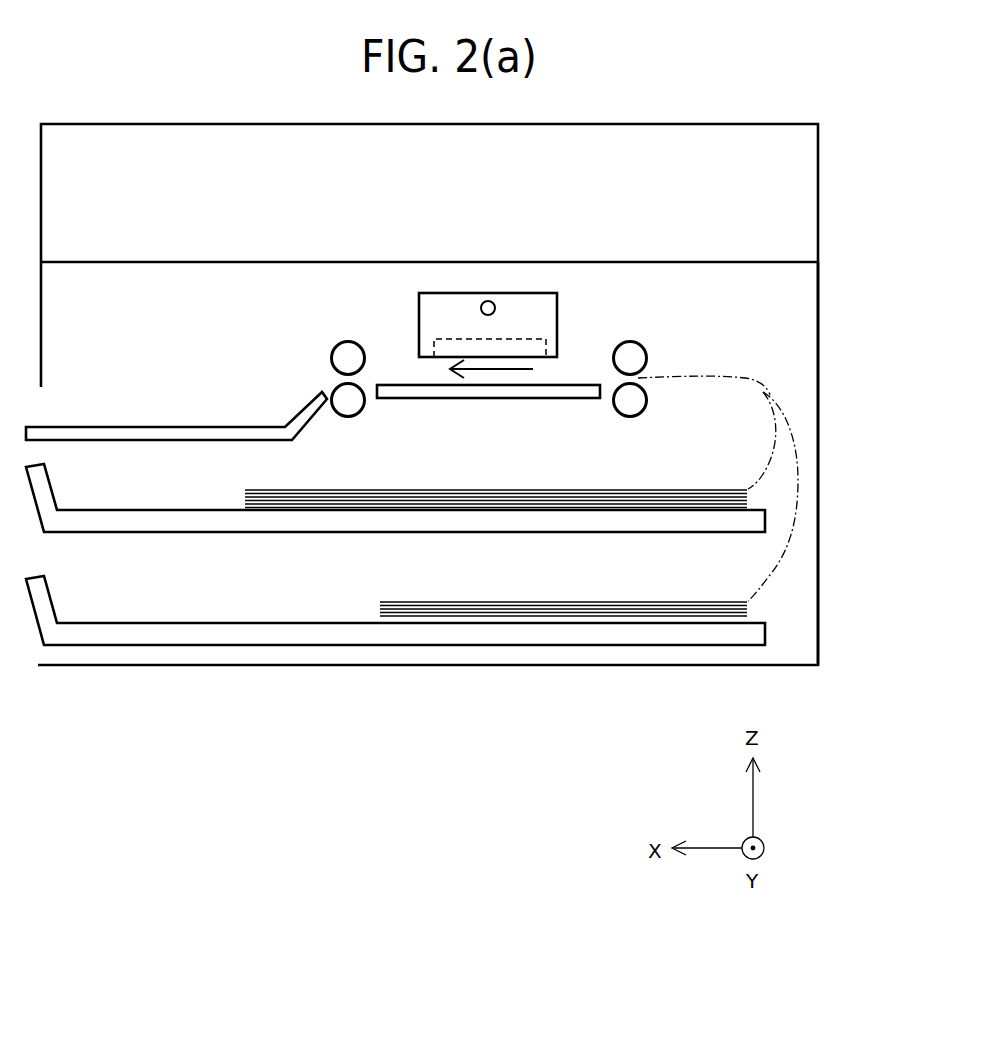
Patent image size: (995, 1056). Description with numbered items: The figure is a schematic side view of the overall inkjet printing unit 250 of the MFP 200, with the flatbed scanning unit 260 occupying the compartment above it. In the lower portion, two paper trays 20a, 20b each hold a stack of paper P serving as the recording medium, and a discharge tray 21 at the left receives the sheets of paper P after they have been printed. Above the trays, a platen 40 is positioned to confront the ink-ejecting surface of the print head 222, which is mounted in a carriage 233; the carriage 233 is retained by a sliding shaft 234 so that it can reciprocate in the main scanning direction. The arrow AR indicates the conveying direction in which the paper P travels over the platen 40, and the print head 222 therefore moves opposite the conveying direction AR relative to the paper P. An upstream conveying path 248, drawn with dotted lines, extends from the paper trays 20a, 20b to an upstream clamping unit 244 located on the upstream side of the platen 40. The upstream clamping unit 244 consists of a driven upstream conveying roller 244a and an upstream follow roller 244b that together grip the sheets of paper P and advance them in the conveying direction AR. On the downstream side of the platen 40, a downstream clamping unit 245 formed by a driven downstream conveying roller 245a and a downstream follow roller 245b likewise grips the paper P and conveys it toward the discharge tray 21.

The MFP 200 is at (142, 90).
The flatbed scanning unit 260 is at (840, 196).
The inkjet printing unit 250 is at (839, 335).
The carriage 233 is at (557, 298).
The sliding shaft 234 is at (490, 301).
The print head 222 is at (538, 339).
The platen 40 is at (400, 385).
The conveying direction AR is at (495, 374).
The downstream clamping unit 245 is at (277, 362).
The downstream conveying roller 245a is at (342, 345).
The downstream follow roller 245b is at (340, 388).
The upstream clamping unit 244 is at (702, 354).
The upstream conveying roller 244a is at (630, 342).
The upstream follow roller 244b is at (645, 392).
The upstream conveying path 248 is at (763, 392).
The discharge tray 21 is at (148, 427).
The paper tray 20a is at (103, 512).
The paper tray 20b is at (103, 624).
The paper P is at (311, 489).